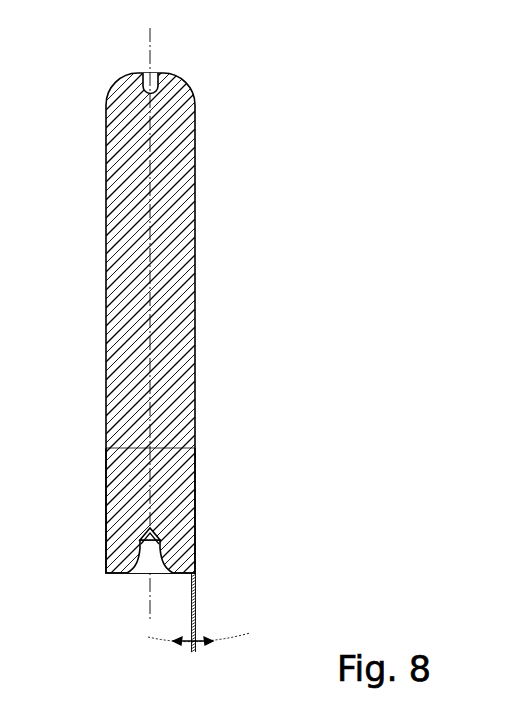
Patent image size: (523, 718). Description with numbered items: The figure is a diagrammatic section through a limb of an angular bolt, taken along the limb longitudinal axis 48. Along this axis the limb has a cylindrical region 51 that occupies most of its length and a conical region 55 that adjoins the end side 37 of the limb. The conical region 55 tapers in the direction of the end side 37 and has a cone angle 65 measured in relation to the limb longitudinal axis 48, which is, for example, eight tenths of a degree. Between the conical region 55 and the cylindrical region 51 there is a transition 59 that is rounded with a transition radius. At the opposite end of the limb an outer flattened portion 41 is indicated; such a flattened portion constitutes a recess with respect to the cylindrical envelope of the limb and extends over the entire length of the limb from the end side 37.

The end side 37 is at (123, 575).
The outer flattened portion 41 is at (139, 75).
The limb longitudinal axis 48 is at (151, 53).
The cylindrical region 51 is at (208, 282).
The conical region 55 is at (208, 524).
The transition 59 is at (196, 448).
The cone angle 65 is at (199, 624).